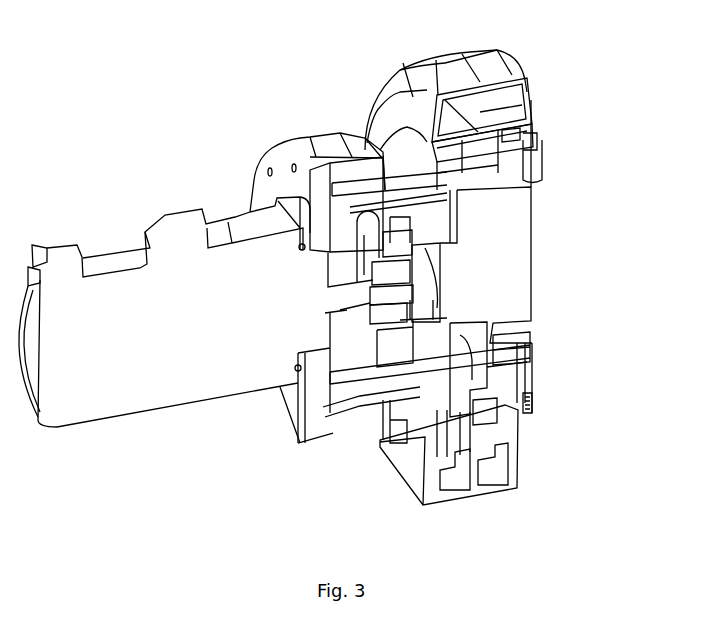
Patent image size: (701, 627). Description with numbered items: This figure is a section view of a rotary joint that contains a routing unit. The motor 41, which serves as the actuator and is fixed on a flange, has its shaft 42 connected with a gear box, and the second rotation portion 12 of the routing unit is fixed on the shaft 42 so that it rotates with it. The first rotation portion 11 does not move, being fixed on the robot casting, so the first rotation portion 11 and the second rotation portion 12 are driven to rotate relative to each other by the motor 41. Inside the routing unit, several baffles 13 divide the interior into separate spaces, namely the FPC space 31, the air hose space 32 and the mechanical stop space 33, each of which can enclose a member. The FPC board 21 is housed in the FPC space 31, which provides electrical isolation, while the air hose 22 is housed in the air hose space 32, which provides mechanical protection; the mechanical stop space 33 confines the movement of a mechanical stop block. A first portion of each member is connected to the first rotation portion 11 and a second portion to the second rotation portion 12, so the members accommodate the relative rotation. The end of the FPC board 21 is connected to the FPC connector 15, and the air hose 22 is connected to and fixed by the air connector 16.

The first rotation portion 11 is at (440, 70).
The second rotation portion 12 is at (493, 67).
The baffles 13 is at (413, 137).
The FPC connector 15 is at (380, 443).
The air connector 16 is at (533, 387).
The FPC board 21 is at (483, 147).
The air hose 22 is at (477, 118).
The FPC space 31 is at (532, 173).
The air hose space 32 is at (445, 127).
The mechanical stop space 33 is at (507, 90).
The motor 41 is at (188, 268).
The shaft 42 is at (497, 277).